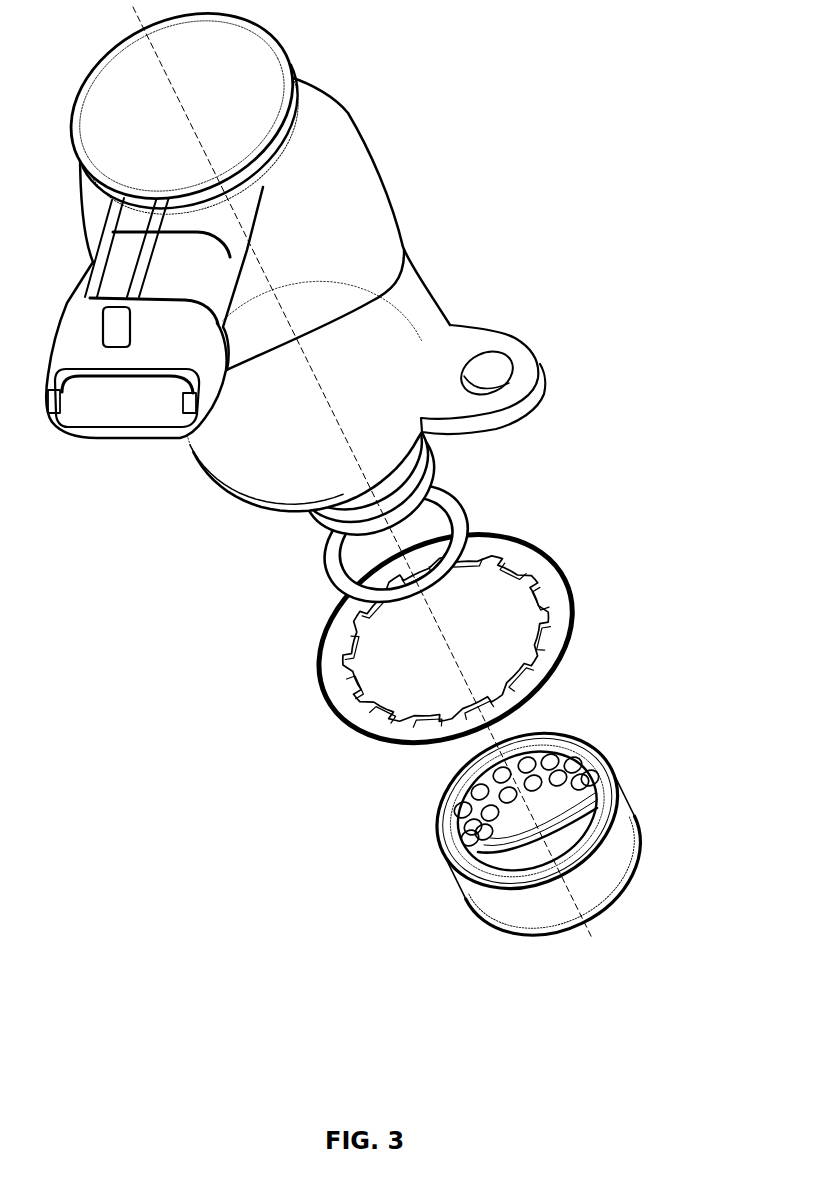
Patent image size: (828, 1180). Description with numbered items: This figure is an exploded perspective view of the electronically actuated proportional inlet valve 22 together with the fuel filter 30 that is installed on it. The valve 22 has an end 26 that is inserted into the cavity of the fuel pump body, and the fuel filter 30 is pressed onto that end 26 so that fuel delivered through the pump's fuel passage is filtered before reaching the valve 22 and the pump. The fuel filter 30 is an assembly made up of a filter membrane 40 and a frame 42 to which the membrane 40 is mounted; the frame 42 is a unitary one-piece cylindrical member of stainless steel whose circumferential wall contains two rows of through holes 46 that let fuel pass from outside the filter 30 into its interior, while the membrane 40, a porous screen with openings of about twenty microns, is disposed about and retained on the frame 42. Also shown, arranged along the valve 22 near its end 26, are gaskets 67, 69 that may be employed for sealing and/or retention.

The electronically actuated proportional inlet valve 22 is at (388, 170).
The end 26 is at (433, 463).
The gasket 69 is at (463, 517).
The gasket 67 is at (568, 590).
The fuel filter 30 is at (522, 805).
The frame 42 is at (573, 740).
The through holes 46 is at (483, 793).
The filter membrane 40 is at (498, 897).